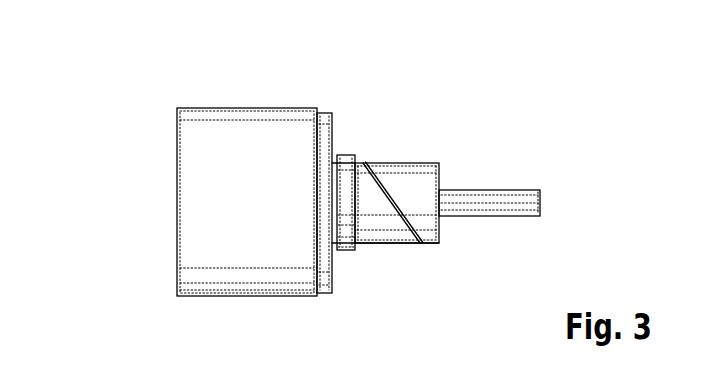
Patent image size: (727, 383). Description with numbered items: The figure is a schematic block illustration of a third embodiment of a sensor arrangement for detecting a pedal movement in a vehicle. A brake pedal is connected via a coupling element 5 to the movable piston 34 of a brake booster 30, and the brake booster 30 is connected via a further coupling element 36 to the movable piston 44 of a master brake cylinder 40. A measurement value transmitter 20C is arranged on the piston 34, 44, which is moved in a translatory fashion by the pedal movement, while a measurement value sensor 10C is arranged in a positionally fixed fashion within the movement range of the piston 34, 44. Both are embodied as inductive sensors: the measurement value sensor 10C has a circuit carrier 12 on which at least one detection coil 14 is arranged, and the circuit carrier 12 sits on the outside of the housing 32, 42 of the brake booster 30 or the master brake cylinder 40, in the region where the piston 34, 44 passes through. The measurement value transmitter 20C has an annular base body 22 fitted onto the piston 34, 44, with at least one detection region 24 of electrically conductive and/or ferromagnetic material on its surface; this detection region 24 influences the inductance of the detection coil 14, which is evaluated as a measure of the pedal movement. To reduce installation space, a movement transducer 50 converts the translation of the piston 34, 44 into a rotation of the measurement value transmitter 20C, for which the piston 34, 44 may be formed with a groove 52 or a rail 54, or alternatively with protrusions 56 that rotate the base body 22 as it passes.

The brake booster 30 is at (184, 159).
The master brake cylinder 40 is at (184, 159).
The housing 32 is at (229, 171).
The housing 42 is at (203, 122).
The measurement value sensor 10C is at (306, 191).
The circuit carrier 12 is at (328, 240).
The detection coil 14 is at (322, 294).
The base body 22 is at (369, 160).
The detection region 24 is at (352, 165).
The piston 34 is at (405, 220).
The piston 44 is at (408, 170).
The movement transducer 50 is at (410, 268).
The groove 52 is at (461, 230).
The rail 54 is at (461, 230).
The protrusions 56 is at (410, 230).
The coupling element 5 is at (496, 169).
The further coupling element 36 is at (493, 202).
The measurement value transmitter 20C is at (492, 187).